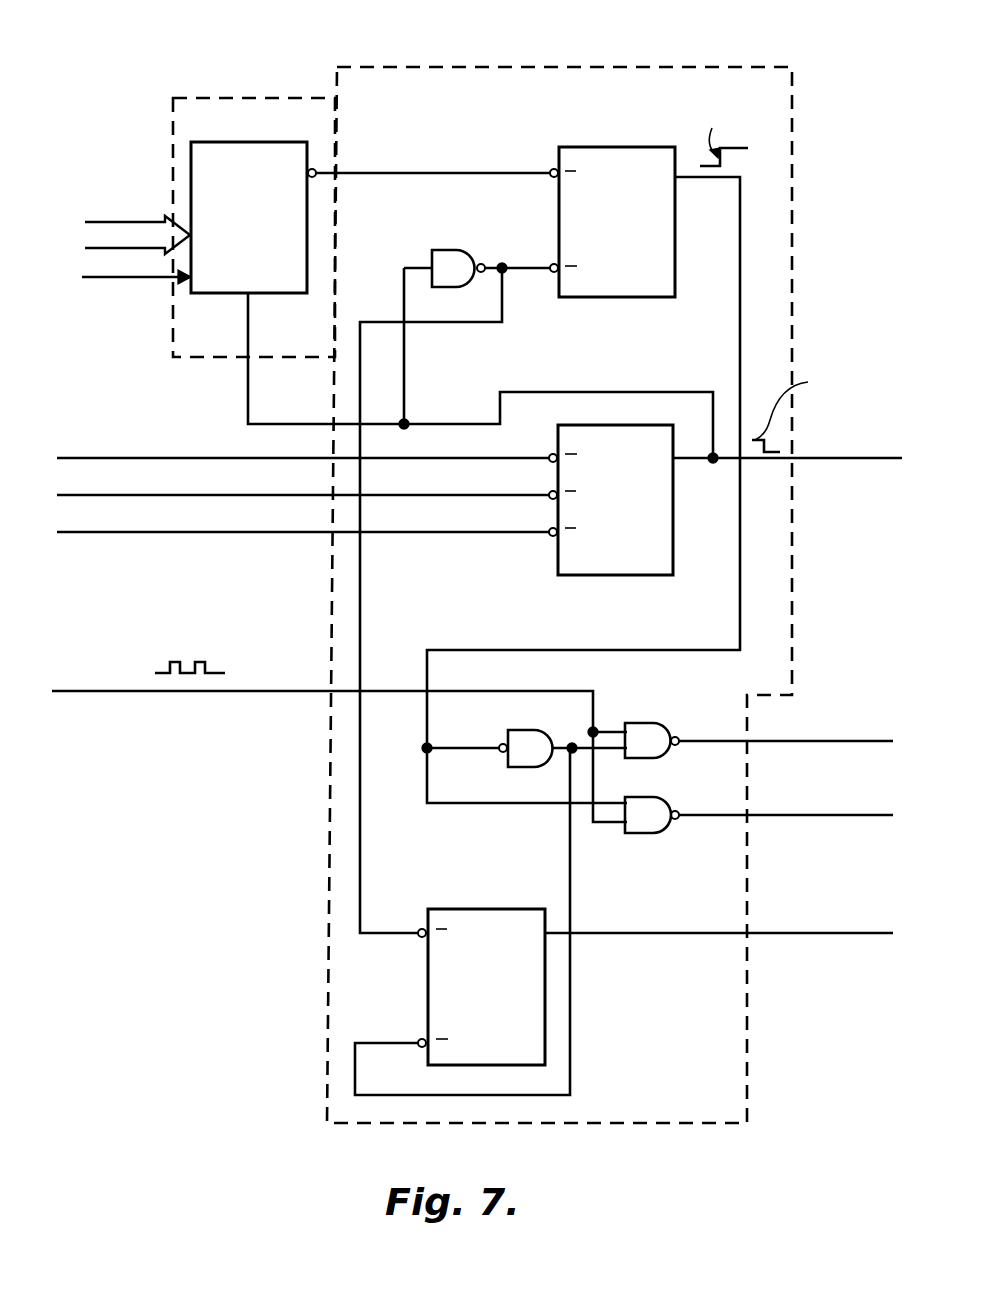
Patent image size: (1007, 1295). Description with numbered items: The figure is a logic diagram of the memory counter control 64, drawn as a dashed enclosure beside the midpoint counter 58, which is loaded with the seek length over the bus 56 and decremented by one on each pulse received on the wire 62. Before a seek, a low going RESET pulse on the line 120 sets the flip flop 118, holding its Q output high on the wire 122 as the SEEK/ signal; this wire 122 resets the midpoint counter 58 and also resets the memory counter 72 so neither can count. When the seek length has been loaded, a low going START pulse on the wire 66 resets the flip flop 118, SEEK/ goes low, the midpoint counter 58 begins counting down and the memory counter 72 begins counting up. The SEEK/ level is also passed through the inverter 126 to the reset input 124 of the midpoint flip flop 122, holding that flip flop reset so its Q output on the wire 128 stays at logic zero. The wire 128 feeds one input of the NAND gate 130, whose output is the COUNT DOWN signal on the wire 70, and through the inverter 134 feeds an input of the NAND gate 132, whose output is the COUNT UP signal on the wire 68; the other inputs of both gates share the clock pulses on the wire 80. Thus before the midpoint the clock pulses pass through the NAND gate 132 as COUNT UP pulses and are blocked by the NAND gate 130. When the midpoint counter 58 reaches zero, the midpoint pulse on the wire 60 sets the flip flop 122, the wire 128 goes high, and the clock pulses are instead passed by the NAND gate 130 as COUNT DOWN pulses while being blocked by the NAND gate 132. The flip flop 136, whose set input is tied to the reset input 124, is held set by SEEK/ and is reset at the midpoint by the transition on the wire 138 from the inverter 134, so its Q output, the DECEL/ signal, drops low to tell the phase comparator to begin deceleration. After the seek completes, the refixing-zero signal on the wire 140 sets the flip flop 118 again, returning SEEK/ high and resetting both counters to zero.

The bus 56 is at (128, 222).
The midpoint counter 58 is at (233, 98).
The wire 60 is at (490, 172).
The wire 62 is at (128, 276).
The memory counter control 64 is at (392, 67).
The wire 66 is at (238, 460).
The wire 68 is at (770, 743).
The wire 70 is at (760, 817).
The memory counter 72 is at (787, 455).
The wire 80 is at (152, 694).
The flip flop 118 is at (674, 575).
The line 120 is at (168, 534).
The wire 122 is at (676, 294).
The reset input 124 is at (528, 270).
The inverter 126 is at (458, 290).
The wire 128 is at (712, 182).
The NAND gate 130 is at (638, 835).
The NAND gate 132 is at (636, 723).
The inverter 134 is at (525, 768).
The flip flop 136 is at (546, 1065).
The wire 138 is at (572, 1045).
The wire 140 is at (380, 497).